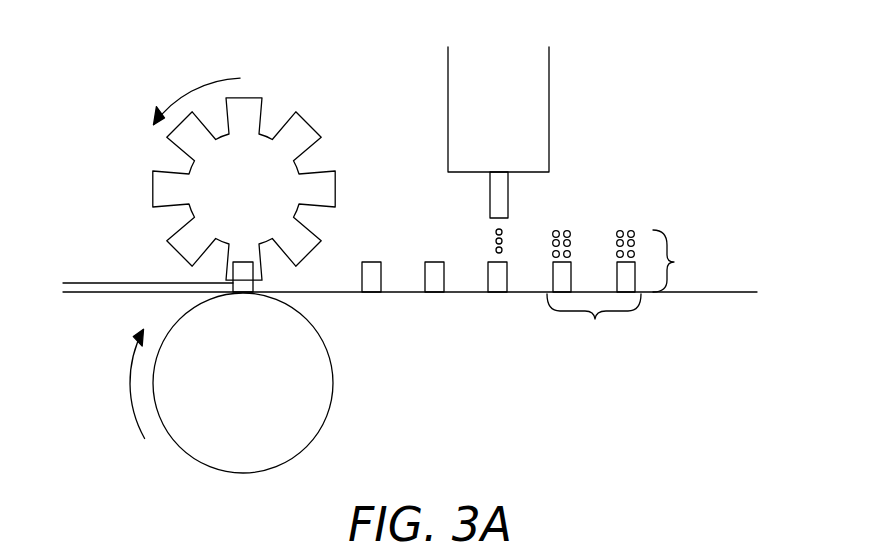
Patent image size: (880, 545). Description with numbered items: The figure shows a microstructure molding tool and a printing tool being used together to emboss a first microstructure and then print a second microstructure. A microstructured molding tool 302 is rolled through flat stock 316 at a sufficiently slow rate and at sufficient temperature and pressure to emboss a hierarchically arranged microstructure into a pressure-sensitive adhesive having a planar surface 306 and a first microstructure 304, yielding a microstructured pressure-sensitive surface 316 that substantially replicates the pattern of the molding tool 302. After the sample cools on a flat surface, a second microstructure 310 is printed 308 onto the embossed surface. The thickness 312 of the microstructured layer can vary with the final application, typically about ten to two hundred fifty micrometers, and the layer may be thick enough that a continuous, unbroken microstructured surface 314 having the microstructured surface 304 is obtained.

The microstructured molding tool 302 is at (300, 114).
The first microstructure 304 is at (373, 262).
The planar surface 306 is at (338, 278).
The printing 308 is at (549, 90).
The second microstructure 310 is at (637, 242).
The microstructure layer thickness 312 is at (674, 262).
The continuous microstructured surface 314 is at (595, 319).
The flat stock 316 is at (63, 283).